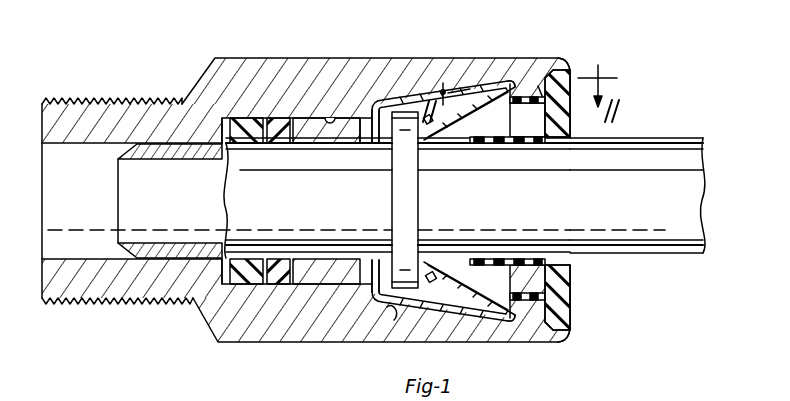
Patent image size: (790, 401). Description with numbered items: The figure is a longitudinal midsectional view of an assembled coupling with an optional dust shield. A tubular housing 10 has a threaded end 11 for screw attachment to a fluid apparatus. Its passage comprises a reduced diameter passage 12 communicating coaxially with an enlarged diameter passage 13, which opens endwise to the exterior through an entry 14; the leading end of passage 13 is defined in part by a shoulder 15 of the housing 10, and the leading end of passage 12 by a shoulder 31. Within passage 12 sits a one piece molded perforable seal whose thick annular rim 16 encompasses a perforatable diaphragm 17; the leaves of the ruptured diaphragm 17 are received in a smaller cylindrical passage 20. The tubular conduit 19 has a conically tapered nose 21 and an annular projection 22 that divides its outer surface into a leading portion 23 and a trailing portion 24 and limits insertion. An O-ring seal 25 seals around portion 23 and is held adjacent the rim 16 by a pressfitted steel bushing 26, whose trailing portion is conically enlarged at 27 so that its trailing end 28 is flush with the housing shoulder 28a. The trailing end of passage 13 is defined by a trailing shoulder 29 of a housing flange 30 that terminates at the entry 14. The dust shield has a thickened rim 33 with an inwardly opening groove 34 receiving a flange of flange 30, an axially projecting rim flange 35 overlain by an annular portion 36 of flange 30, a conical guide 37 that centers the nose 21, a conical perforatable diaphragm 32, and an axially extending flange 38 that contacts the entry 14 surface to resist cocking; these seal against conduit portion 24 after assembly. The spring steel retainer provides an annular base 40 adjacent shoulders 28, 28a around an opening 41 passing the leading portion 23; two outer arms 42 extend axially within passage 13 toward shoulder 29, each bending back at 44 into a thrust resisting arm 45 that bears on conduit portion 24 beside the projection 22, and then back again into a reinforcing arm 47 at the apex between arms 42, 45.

The tubular housing 10 is at (267, 55).
The threaded end 11 is at (104, 101).
The reduced diameter passage 12 is at (332, 118).
The enlarged diameter passage 13 is at (440, 76).
The entry 14 is at (527, 120).
The shoulder 15 is at (393, 322).
The annular rim 16 is at (248, 284).
The perforatable diaphragm 17 is at (198, 256).
The tubular conduit 19 is at (716, 185).
The cylindrical passage 20 is at (163, 263).
The tapered nose 21 is at (128, 151).
The annular projection 22 is at (419, 205).
The leading portion 23 is at (278, 204).
The trailing portion 24 is at (536, 204).
The O-ring seal 25 is at (278, 284).
The steel bushing 26 is at (342, 118).
The conically enlarged portion 27 is at (368, 130).
The trailing end 28 is at (380, 93).
The housing shoulder 28a is at (383, 311).
The trailing shoulder 29 is at (517, 80).
The housing flange 30 is at (545, 82).
The shoulder 31 is at (226, 119).
The dust shield diaphragm 32 is at (495, 136).
The thickened rim 33 is at (572, 270).
The groove 34 is at (570, 60).
The rim flange 35 is at (546, 322).
The annular portion 36 is at (573, 336).
The conical guide 37 is at (548, 104).
The axially extending flange 38 is at (522, 296).
The annular base 40 is at (381, 258).
The opening 41 is at (384, 136).
The outer arms 42 is at (466, 94).
The bend 44 is at (510, 316).
The thrust resisting arm 45 is at (448, 282).
The reinforcing arm 47 is at (470, 286).